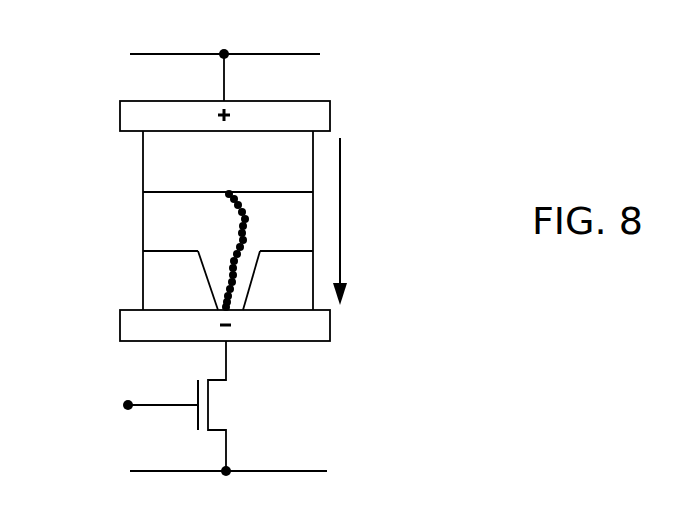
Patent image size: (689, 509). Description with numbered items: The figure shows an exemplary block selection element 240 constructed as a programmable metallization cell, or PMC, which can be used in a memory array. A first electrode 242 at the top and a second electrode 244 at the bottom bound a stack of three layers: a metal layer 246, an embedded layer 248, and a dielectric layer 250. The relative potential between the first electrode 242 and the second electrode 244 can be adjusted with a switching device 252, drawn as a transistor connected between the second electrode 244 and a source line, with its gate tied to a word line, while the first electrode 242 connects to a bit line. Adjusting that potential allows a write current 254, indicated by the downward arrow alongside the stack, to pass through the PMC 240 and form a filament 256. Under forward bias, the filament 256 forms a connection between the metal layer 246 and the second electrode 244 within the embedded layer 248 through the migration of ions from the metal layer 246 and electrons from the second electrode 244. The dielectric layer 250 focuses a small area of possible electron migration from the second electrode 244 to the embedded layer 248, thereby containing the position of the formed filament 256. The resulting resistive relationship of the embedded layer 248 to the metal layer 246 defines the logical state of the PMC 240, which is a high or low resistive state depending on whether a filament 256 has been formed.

The block selection element 240 is at (103, 29).
The first electrode 242 is at (119, 102).
The second electrode 244 is at (119, 315).
The metal layer 246 is at (142, 165).
The embedded layer 248 is at (142, 224).
The dielectric layer 250 is at (142, 284).
The switching device 252 is at (192, 404).
The write current 254 is at (342, 212).
The filament 256 is at (233, 287).